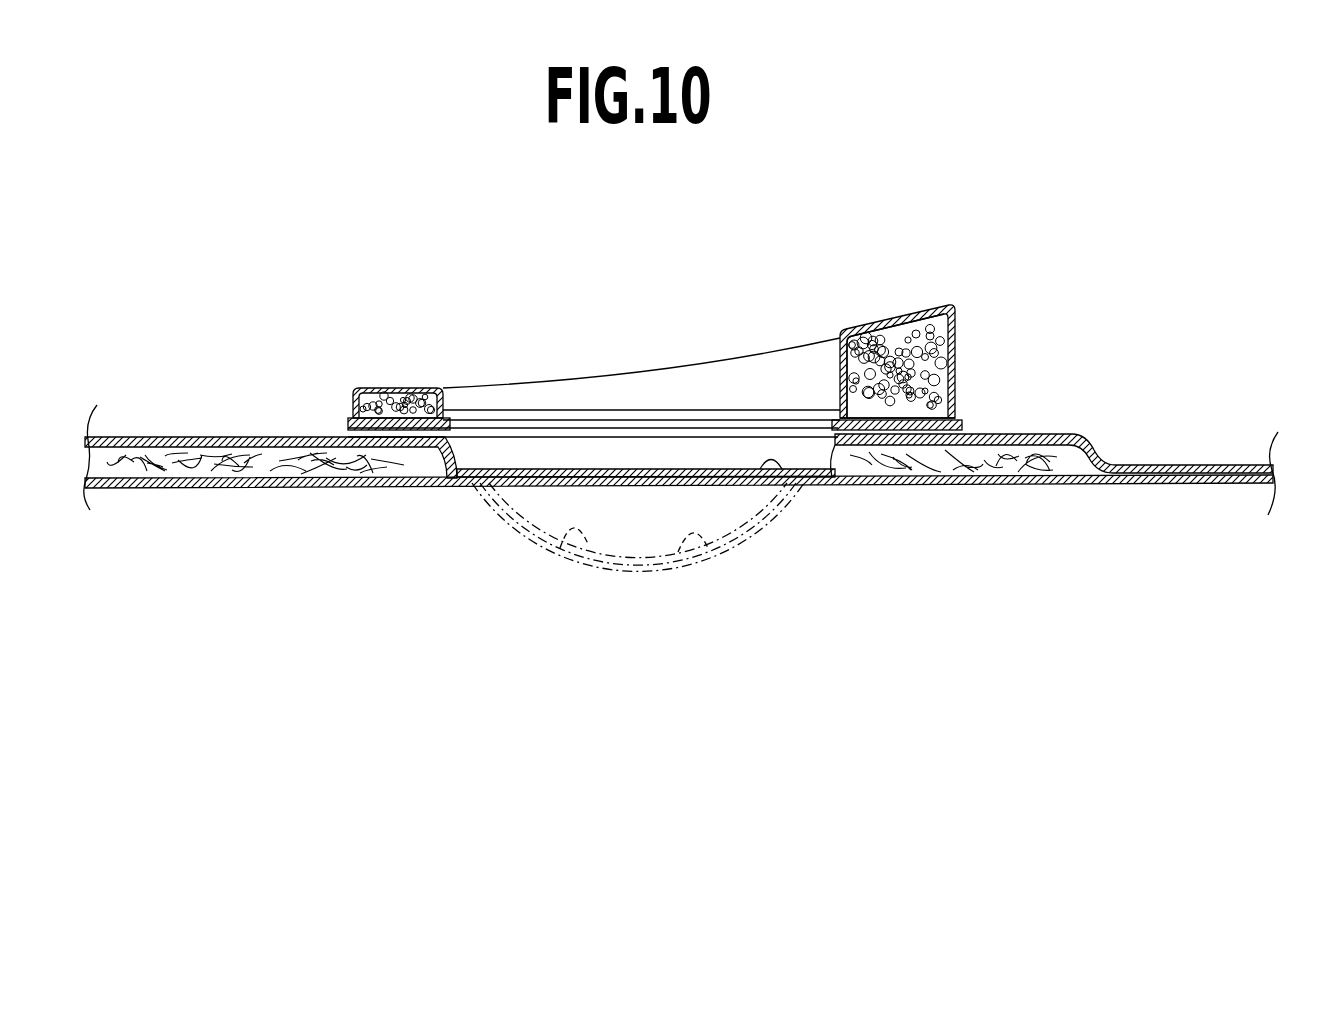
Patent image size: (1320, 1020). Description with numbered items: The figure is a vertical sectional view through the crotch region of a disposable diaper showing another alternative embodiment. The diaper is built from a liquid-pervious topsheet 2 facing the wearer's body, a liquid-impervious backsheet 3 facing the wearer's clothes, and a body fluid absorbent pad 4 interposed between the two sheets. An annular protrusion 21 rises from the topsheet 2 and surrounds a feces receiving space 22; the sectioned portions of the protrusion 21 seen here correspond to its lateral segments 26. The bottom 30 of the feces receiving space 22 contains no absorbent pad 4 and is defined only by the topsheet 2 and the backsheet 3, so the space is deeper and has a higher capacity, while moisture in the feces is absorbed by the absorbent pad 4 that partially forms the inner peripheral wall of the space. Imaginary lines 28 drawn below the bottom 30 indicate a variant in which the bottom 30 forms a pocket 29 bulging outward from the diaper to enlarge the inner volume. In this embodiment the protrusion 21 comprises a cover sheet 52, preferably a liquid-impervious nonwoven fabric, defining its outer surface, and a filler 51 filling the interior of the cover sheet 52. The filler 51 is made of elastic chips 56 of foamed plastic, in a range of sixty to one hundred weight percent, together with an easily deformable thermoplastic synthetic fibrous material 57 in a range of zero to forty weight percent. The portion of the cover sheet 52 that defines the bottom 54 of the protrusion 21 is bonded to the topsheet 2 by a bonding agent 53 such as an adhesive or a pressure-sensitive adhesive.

The topsheet 2 is at (650, 469).
The backsheet 3 is at (578, 486).
The body fluid absorbent pad 4 is at (1046, 468).
The protrusion 21 is at (412, 387).
The feces receiving space 22 is at (777, 362).
The lateral segments 26 is at (573, 405).
The imaginary lines 28 is at (537, 552).
The pocket 29 is at (713, 502).
The bottom of the feces receiving space 30 is at (773, 470).
The filler 51 is at (939, 306).
The cover sheet 52 is at (953, 360).
The bonding agent 53 is at (950, 432).
The bottom of the protrusion 54 is at (880, 420).
The elastic chips 56 is at (905, 313).
The thermoplastic synthetic fibrous material 57 is at (923, 246).